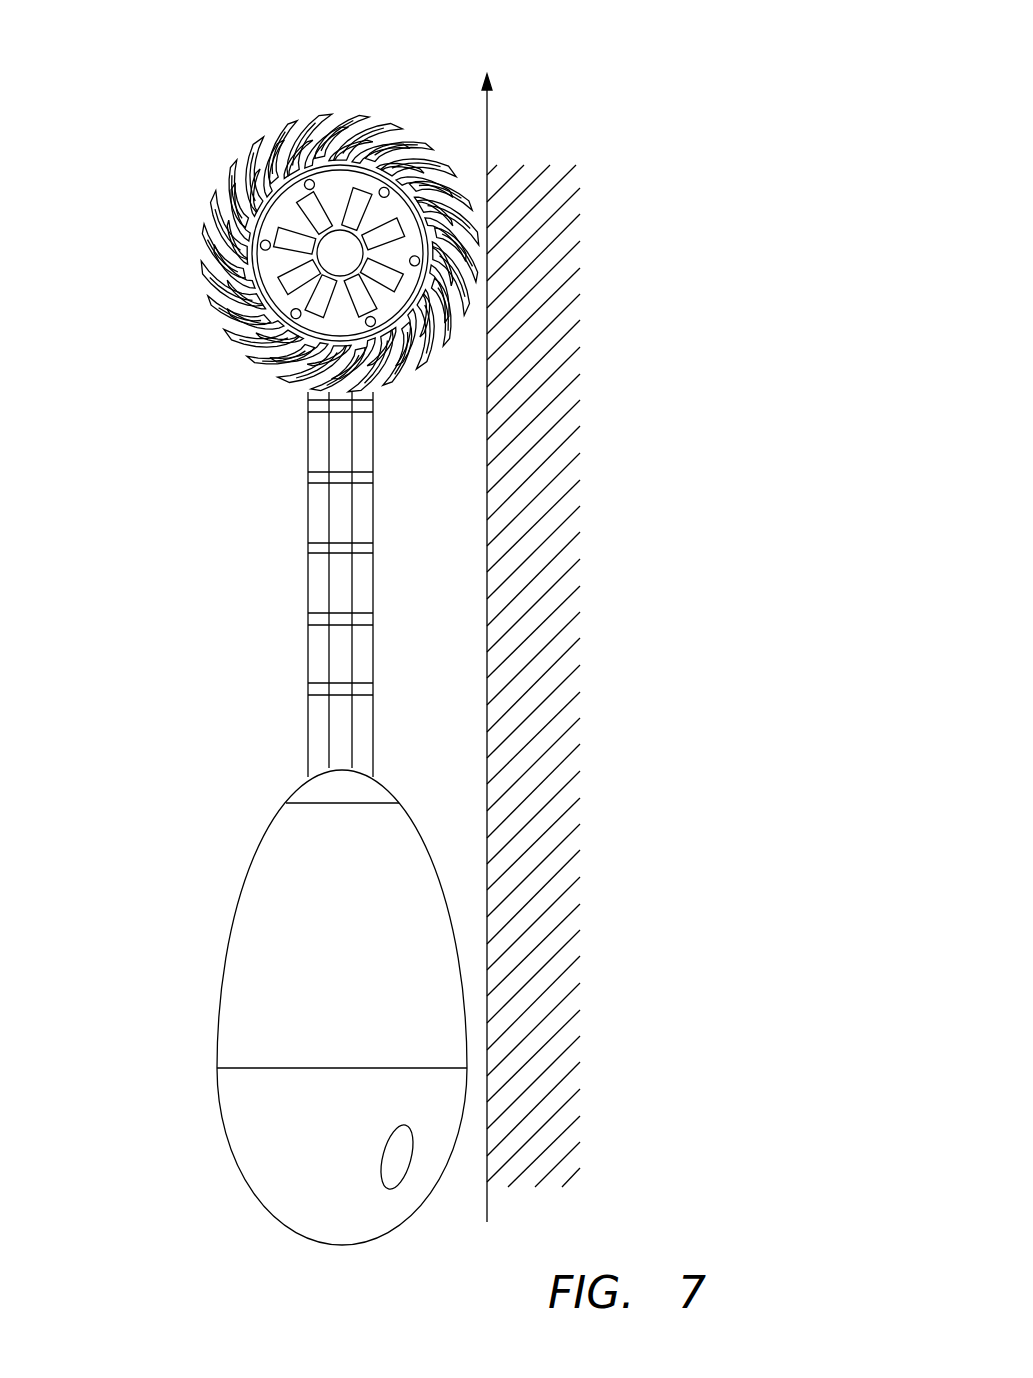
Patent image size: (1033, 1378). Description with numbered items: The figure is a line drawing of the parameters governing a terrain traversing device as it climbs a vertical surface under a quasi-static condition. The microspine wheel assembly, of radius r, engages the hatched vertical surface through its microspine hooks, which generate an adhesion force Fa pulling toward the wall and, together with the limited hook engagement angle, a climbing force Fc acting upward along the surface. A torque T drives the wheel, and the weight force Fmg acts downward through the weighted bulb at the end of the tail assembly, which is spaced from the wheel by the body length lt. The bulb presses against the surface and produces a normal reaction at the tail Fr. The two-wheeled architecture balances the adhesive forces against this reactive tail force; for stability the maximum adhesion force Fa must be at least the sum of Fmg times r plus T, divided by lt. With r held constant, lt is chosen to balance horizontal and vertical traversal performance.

The torque T is at (199, 392).
The radius of the microspine wheel assembly r is at (477, 48).
The climbing force Fc is at (561, 137).
The adhesion force Fa is at (487, 256).
The normal reaction at the tail Fr is at (500, 1066).
The weight force Fmg is at (341, 633).
The body length lt is at (722, 268).